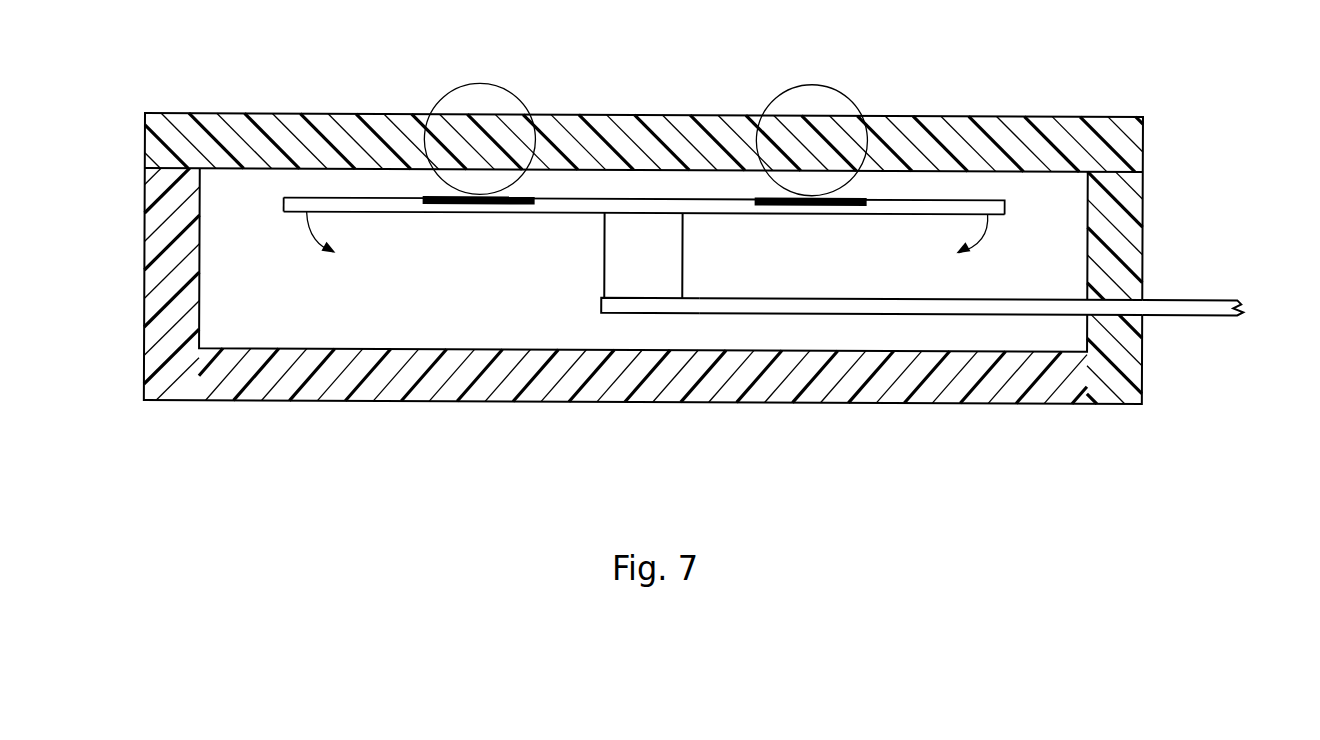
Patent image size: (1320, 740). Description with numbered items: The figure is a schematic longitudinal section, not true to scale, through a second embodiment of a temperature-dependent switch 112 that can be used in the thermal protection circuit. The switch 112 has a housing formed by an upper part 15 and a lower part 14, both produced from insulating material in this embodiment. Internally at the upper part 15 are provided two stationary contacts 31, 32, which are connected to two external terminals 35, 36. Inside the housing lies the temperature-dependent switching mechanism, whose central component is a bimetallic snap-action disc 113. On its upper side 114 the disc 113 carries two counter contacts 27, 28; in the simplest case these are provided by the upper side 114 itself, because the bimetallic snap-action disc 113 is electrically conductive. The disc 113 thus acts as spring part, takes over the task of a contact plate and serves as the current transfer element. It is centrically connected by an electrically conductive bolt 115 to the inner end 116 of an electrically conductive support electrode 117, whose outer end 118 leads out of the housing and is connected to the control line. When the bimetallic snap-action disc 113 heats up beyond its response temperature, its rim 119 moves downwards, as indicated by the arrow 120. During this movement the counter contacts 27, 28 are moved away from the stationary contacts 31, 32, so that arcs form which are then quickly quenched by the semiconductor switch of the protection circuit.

The lower part 14 is at (1057, 374).
The upper part 15 is at (1138, 141).
The counter contact 27 is at (488, 204).
The counter contact 28 is at (826, 204).
The stationary contact 31 is at (497, 181).
The stationary contact 32 is at (828, 182).
The external terminal 35 is at (477, 101).
The external terminal 36 is at (808, 99).
The temperature-dependent switch 112 is at (1237, 136).
The bimetallic snap-action disc 113 is at (590, 208).
The upper side 114 is at (581, 195).
The bolt 115 is at (650, 268).
The inner end 116 is at (665, 303).
The support electrode 117 is at (983, 303).
The outer end 118 is at (1213, 308).
The rim 119 is at (284, 202).
The arrow 120 is at (306, 225).